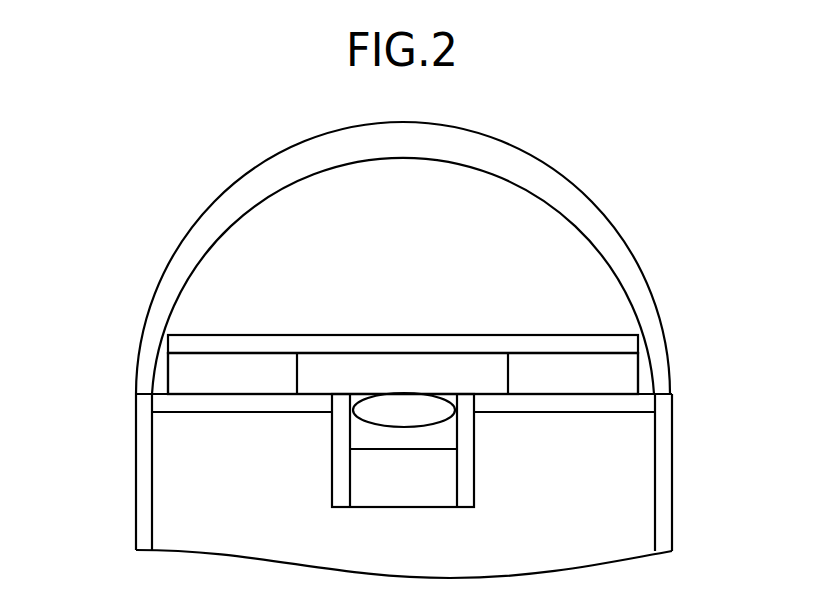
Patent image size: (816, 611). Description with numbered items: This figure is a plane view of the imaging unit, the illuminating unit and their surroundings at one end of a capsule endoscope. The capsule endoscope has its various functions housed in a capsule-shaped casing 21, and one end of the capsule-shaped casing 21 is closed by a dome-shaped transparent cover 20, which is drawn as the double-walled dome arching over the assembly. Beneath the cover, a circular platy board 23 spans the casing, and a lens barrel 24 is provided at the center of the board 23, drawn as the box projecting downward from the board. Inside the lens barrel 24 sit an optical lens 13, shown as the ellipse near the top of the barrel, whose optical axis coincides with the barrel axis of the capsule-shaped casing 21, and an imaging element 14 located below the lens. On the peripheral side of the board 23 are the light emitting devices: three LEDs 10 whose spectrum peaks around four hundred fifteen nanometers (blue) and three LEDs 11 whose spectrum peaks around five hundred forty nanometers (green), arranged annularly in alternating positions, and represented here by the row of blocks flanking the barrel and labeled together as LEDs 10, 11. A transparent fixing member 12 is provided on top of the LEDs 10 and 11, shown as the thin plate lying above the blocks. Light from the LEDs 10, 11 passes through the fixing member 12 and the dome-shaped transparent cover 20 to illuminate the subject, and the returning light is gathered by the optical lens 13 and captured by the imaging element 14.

The LED 10 is at (190, 372).
The LED 11 is at (612, 368).
The transparent fixing member 12 is at (220, 334).
The optical lens 13 is at (442, 411).
The imaging element 14 is at (393, 509).
The dome-shaped transparent cover 20 is at (544, 158).
The capsule-shaped casing 21 is at (673, 508).
The circular platy board 23 is at (638, 412).
The lens barrel 24 is at (475, 492).